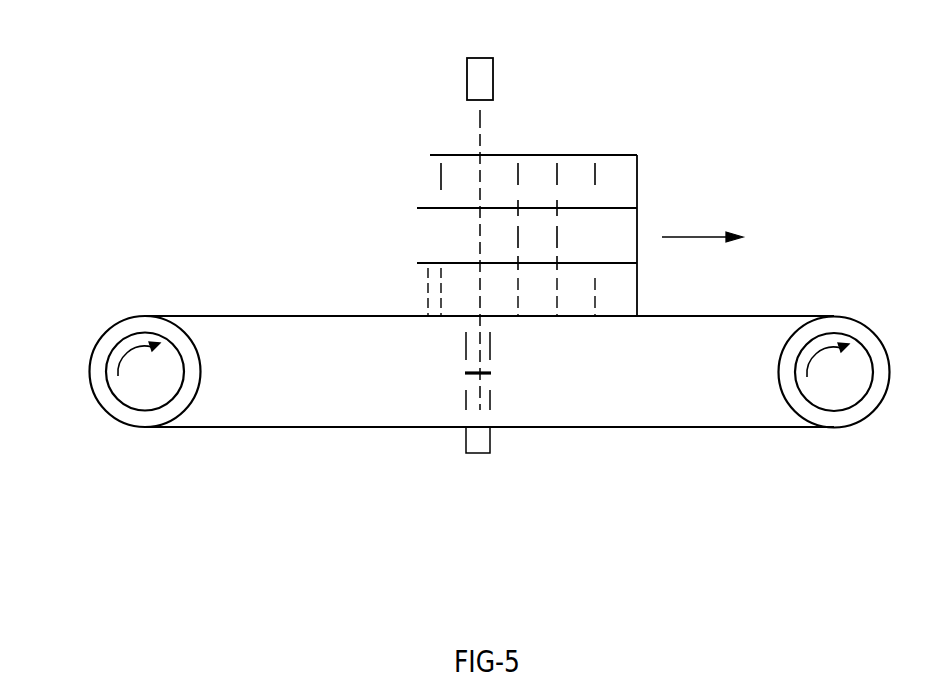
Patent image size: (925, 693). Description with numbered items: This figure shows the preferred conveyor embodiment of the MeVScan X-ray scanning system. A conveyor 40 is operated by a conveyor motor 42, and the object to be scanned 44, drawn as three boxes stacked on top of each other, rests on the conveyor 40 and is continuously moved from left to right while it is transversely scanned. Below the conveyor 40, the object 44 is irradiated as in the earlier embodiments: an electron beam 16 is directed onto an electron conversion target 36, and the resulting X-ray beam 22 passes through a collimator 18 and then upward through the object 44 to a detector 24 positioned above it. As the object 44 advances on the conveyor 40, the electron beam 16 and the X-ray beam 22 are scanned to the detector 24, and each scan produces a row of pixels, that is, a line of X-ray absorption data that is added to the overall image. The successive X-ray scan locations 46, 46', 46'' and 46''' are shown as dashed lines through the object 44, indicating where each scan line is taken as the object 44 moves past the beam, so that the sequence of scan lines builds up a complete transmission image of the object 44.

The electron beam 16 is at (478, 402).
The collimator 18 is at (478, 349).
The X-ray beam 22 is at (482, 118).
The detector 24 is at (493, 72).
The electron conversion target 36 is at (478, 375).
The conveyor 40 is at (310, 315).
The conveyor motor 42 is at (122, 422).
The object to be scanned 44 is at (452, 155).
The X-ray scan location 46 is at (382, 236).
The X-ray scan location 46' is at (592, 204).
The X-ray scan location 46'' is at (582, 284).
The X-ray scan location 46''' is at (644, 280).